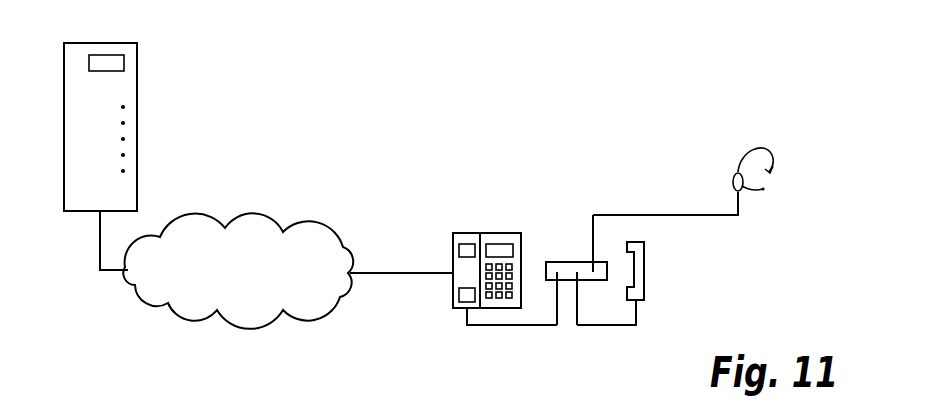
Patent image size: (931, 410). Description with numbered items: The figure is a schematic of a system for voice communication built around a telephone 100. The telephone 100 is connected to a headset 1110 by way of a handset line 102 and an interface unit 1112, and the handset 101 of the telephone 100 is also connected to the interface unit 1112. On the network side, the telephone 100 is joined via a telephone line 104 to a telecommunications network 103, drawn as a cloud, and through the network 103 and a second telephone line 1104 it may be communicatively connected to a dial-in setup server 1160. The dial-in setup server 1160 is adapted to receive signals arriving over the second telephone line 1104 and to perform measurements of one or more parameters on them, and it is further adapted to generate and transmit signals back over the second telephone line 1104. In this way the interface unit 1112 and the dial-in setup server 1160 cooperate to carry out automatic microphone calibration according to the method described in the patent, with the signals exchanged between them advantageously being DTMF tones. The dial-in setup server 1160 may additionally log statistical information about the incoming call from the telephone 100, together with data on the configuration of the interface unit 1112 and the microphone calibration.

The dial-in setup server 1160 is at (141, 41).
The second telephone line 1104 is at (110, 272).
The telecommunications network 103 is at (240, 270).
The telephone line 104 is at (410, 272).
The telephone 100 is at (489, 192).
The handset line 102 is at (522, 325).
The interface unit 1112 is at (567, 270).
The handset 101 is at (640, 248).
The headset 1110 is at (777, 208).